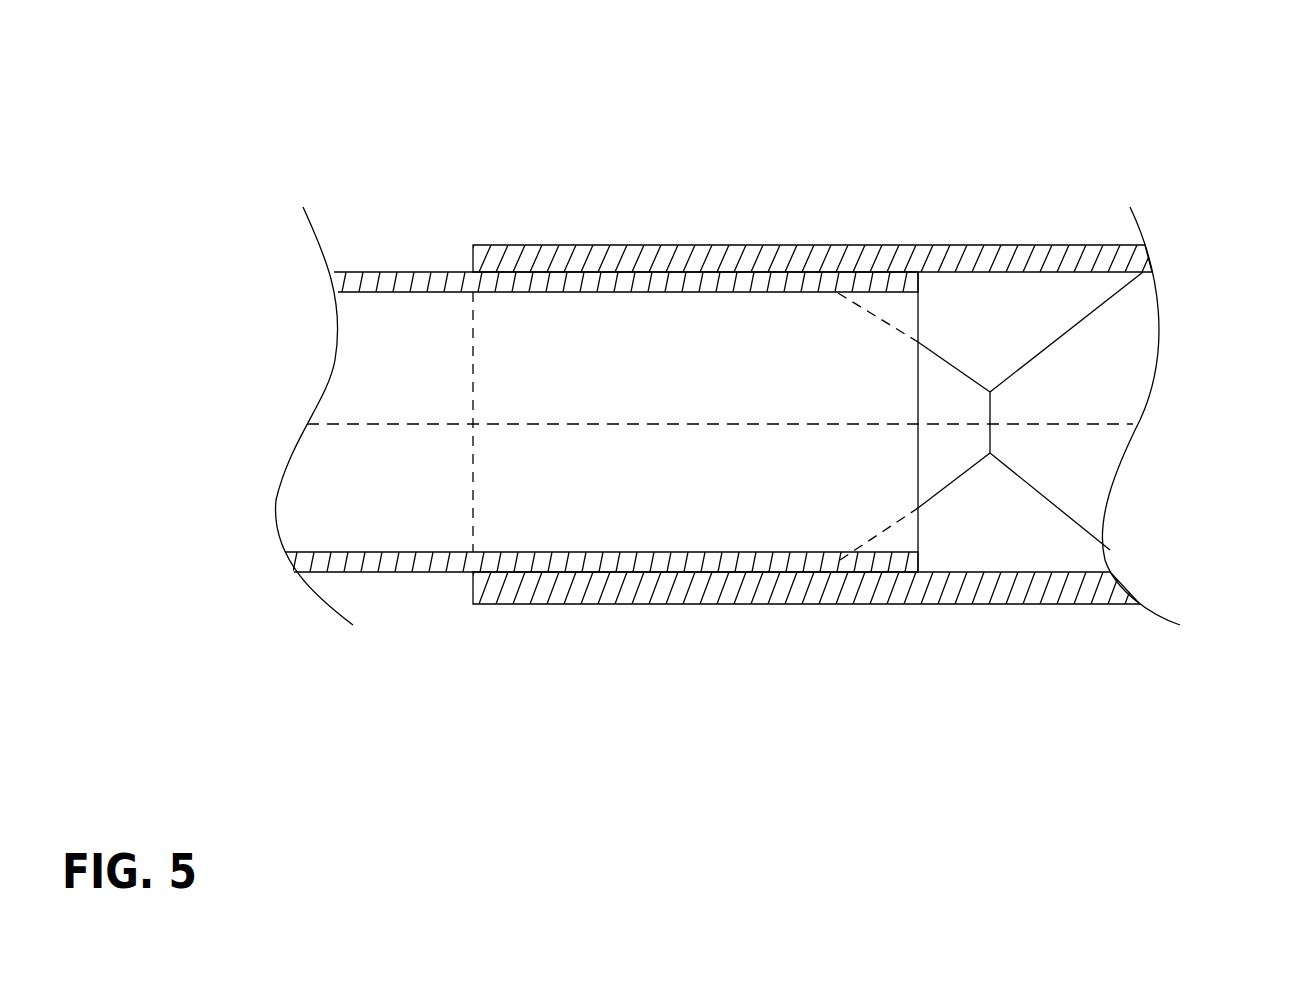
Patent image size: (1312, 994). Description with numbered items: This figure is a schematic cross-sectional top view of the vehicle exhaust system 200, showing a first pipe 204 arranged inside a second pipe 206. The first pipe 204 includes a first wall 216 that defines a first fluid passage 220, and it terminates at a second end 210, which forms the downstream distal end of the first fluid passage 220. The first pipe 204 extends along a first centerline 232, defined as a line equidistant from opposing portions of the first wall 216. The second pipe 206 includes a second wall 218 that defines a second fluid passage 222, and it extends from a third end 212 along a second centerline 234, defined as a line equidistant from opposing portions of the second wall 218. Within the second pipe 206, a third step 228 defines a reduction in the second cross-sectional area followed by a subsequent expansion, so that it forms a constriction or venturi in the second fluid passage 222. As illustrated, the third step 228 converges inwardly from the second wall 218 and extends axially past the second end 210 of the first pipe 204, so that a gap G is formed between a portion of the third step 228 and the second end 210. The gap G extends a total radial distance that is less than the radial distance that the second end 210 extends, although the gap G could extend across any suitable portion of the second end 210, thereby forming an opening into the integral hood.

The vehicle exhaust system 200 is at (218, 87).
The first pipe 204 is at (322, 360).
The second pipe 206 is at (759, 622).
The second end 210 is at (918, 318).
The third end 212 is at (467, 353).
The first wall 216 is at (402, 573).
The second wall 218 is at (1082, 245).
The first fluid passage 220 is at (610, 497).
The second fluid passage 222 is at (1060, 490).
The third step 228 is at (945, 487).
The first centerline 232 is at (705, 422).
The second centerline 234 is at (1075, 407).
The gap G is at (937, 405).